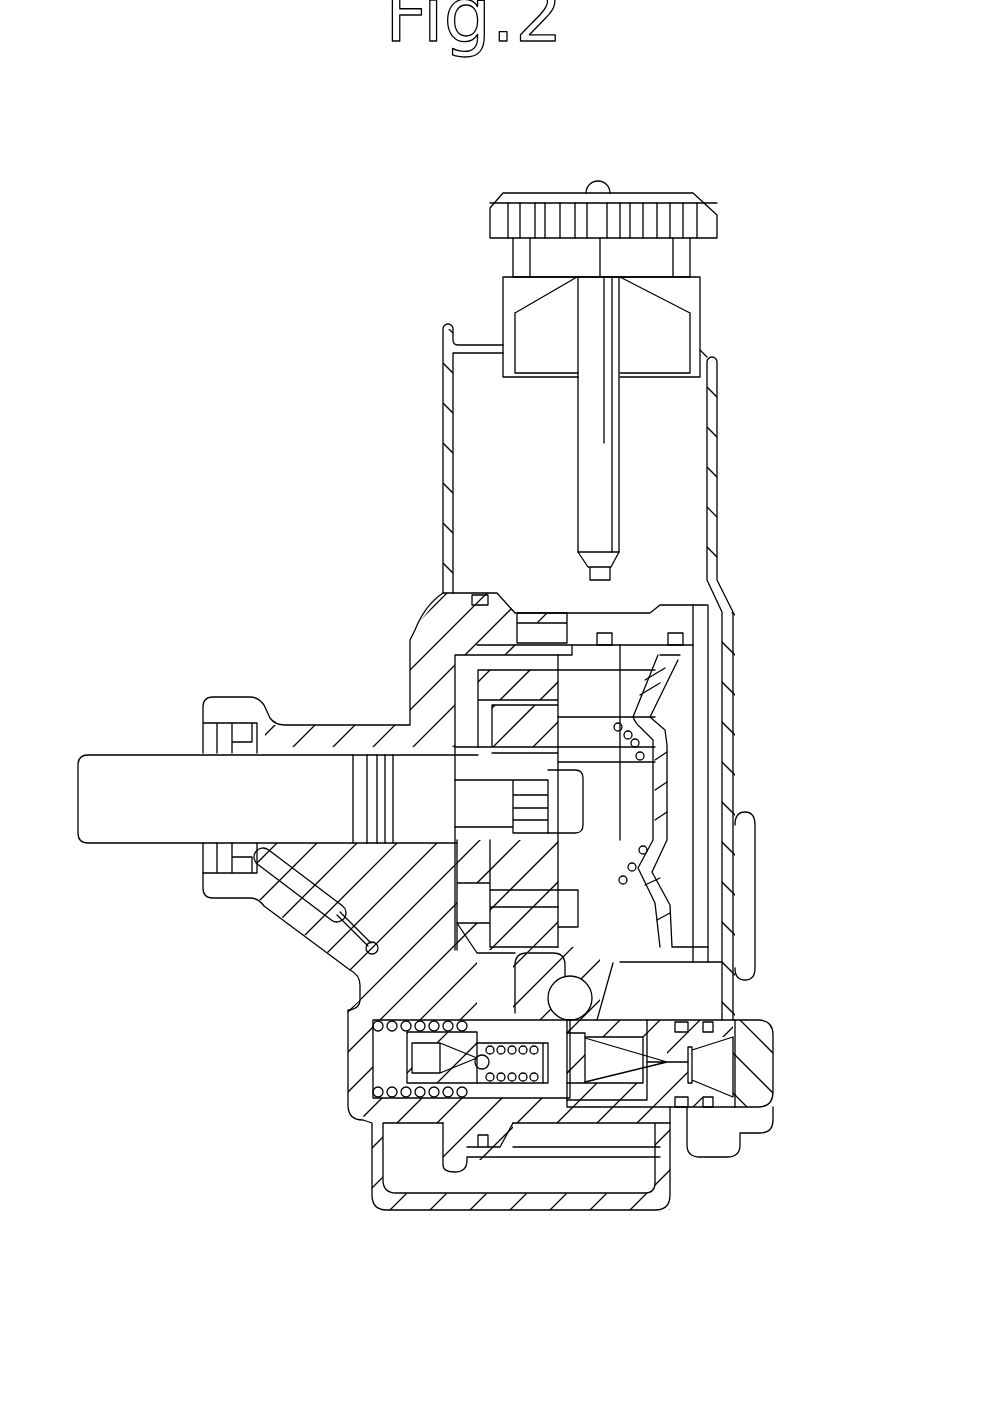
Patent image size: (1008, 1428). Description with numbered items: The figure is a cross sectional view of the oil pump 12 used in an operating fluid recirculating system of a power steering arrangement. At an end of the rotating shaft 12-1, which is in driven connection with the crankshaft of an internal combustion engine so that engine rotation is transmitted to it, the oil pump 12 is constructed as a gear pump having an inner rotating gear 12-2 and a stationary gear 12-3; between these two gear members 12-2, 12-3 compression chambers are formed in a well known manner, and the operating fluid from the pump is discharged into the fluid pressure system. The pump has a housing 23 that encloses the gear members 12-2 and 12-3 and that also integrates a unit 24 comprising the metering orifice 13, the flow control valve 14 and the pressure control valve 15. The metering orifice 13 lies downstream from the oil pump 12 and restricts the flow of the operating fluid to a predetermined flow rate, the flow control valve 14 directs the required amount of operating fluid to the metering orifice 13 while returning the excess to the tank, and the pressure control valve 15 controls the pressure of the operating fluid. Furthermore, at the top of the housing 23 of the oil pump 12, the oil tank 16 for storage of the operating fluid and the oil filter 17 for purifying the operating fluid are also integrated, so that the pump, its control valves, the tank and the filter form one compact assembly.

The oil pump 12 is at (745, 677).
The rotating shaft 12-1 is at (148, 812).
The inner rotating gear 12-2 is at (555, 870).
The stationary gear 12-3 is at (592, 990).
The metering orifice 13 is at (667, 1062).
The flow control valve 14 is at (412, 1100).
The pressure control valve 15 is at (477, 1093).
The oil tank 16 is at (443, 497).
The oil filter 17 is at (533, 613).
The housing 23 is at (430, 617).
The unit 24 is at (645, 1270).